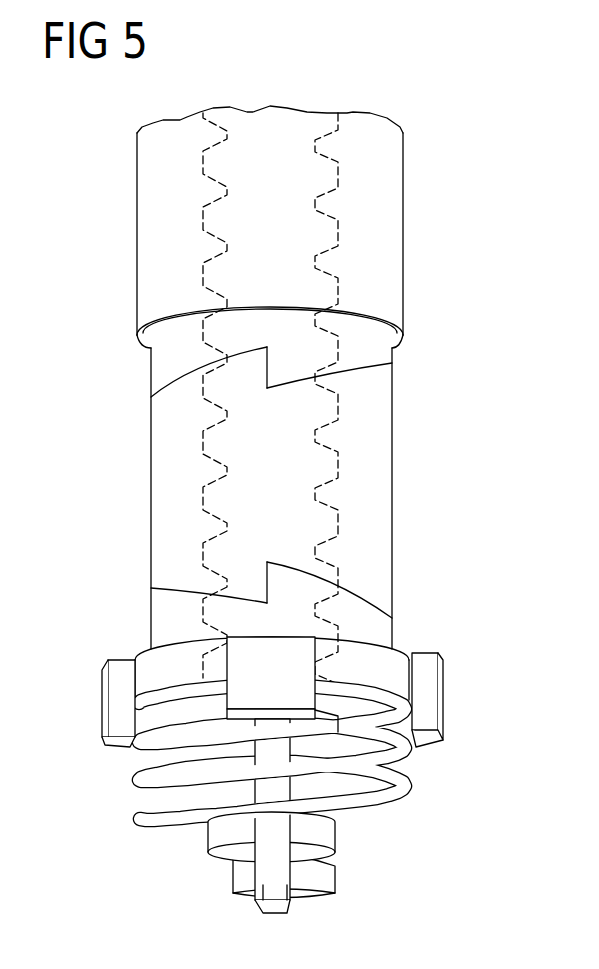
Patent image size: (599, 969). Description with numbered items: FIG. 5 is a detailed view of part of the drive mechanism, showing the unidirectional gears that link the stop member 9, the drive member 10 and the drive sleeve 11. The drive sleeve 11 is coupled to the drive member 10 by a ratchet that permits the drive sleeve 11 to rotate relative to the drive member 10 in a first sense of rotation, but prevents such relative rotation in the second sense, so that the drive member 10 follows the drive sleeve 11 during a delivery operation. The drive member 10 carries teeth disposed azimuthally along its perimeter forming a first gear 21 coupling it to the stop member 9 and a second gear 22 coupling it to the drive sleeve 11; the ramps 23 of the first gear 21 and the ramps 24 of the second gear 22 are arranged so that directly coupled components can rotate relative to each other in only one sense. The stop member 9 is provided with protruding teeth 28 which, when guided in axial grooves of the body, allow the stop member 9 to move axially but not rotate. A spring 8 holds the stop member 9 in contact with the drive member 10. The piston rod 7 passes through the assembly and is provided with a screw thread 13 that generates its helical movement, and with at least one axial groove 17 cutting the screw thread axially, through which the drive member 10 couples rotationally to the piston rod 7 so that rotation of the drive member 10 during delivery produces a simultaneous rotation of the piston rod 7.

The piston rod 7 is at (325, 838).
The spring 8 is at (152, 812).
The stop member 9 is at (167, 615).
The drive member 10 is at (163, 480).
The drive sleeve 11 is at (165, 288).
The screw thread 13 is at (327, 422).
The axial groove 17 is at (273, 848).
The first gear 21 is at (268, 566).
The second gear 22 is at (268, 370).
The ramps of the first gear 23 is at (365, 596).
The ramps of the second gear 24 is at (358, 372).
The teeth 28 is at (120, 695).